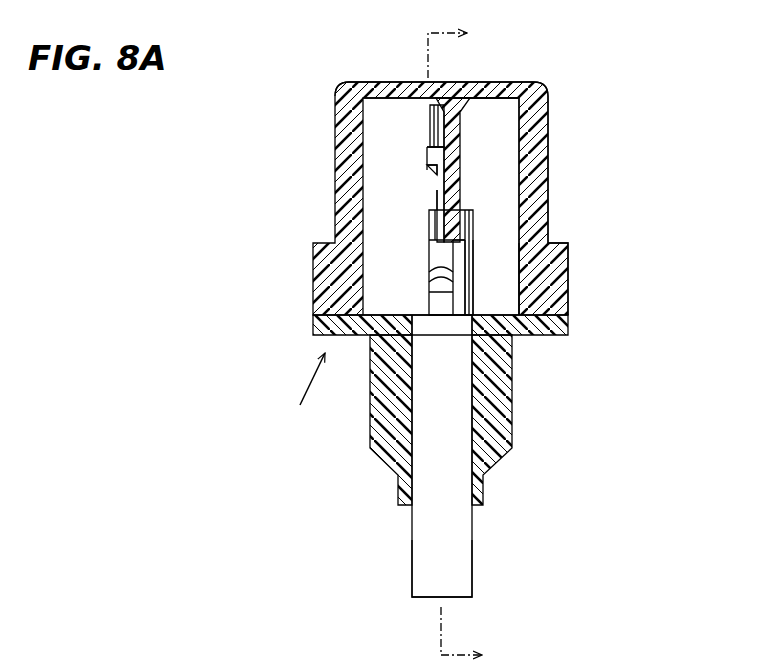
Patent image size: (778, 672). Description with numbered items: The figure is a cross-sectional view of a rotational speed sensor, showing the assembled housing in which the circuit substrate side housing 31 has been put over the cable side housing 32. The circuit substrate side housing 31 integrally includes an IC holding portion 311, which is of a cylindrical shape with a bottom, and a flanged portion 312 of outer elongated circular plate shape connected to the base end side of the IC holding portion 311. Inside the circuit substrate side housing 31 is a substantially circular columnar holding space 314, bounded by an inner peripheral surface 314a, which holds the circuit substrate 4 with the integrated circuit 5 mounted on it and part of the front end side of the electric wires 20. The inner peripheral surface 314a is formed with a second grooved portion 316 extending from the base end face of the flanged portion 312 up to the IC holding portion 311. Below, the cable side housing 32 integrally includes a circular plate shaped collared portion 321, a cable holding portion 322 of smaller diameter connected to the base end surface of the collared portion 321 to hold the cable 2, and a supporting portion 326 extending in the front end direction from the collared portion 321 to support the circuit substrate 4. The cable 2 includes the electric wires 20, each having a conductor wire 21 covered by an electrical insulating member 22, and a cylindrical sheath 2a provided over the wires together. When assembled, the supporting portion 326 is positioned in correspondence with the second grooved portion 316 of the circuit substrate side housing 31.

The cable 2 is at (473, 546).
The sheath 2a is at (418, 563).
The circuit substrate 4 is at (460, 120).
The integrated circuit 5 is at (428, 117).
The electric wire 20 is at (275, 145).
The conductor wire 21 is at (437, 192).
The electrical insulating member 22 is at (430, 275).
The circuit substrate side housing 31 is at (675, 217).
The IC holding portion 311 is at (548, 190).
The flanged portion 312 is at (568, 255).
The holding space 314 is at (500, 167).
The inner peripheral surface 314a is at (498, 125).
The second grooved portion 316 is at (460, 244).
The collared portion 321 is at (556, 338).
The cable holding portion 322 is at (528, 410).
The supporting portion 326 is at (472, 273).
The cable side housing 32 is at (514, 410).